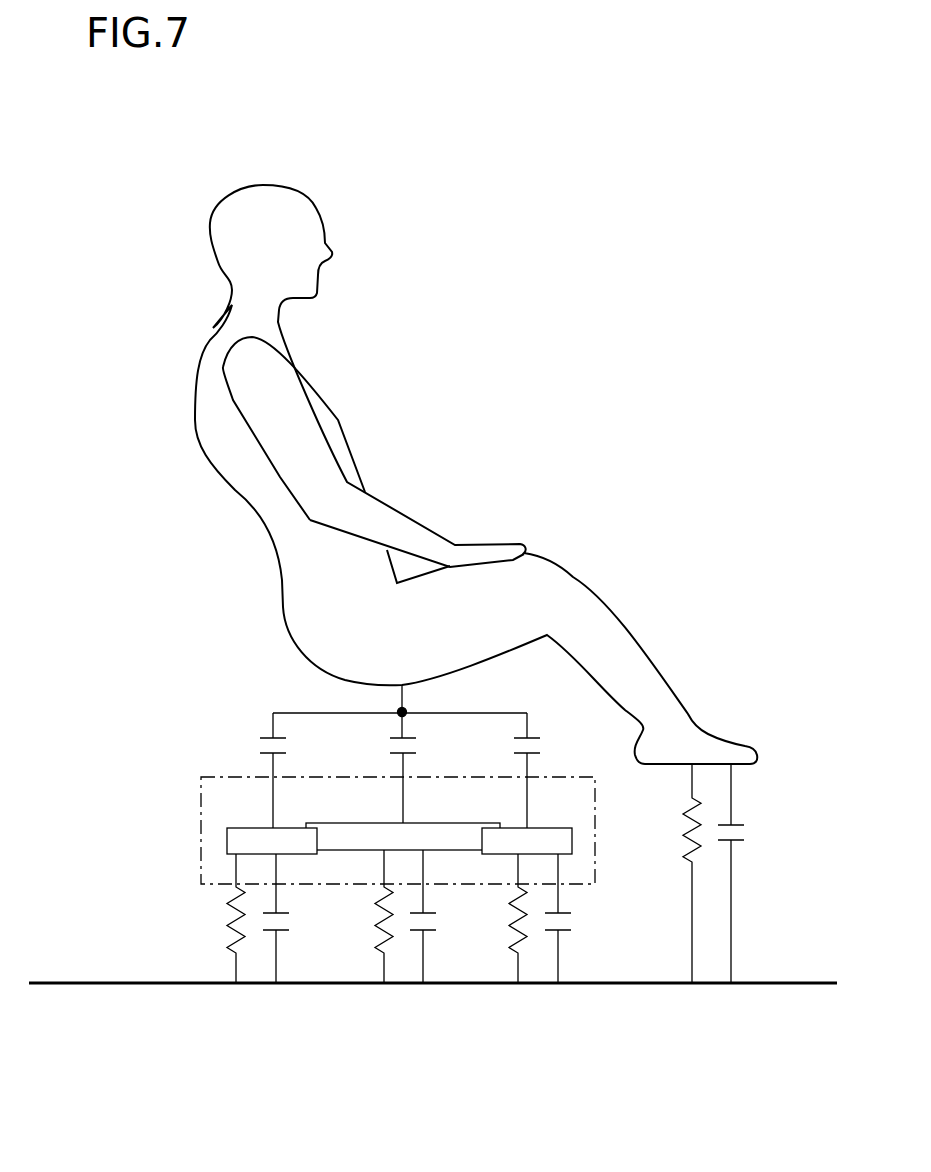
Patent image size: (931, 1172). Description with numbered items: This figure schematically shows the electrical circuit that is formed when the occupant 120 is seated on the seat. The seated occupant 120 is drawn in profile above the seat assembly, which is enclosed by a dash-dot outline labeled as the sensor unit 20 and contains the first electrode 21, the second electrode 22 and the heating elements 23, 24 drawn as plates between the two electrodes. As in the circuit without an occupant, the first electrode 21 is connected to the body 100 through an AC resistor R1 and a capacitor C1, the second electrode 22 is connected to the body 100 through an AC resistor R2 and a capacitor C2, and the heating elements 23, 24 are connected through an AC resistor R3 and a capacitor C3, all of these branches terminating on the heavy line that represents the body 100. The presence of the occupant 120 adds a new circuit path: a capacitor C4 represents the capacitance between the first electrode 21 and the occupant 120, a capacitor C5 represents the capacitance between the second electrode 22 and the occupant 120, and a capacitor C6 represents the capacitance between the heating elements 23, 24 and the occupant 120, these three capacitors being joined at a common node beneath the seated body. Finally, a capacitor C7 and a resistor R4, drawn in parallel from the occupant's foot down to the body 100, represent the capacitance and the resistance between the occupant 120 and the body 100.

The occupant 120 is at (260, 185).
The sensor unit 20 is at (199, 806).
The first electrode 21 is at (238, 828).
The second electrode 22 is at (561, 828).
The heating element 23 is at (451, 823).
The heating element 24 is at (403, 817).
The body 100 is at (63, 982).
The capacitor C1 is at (291, 918).
The capacitor C2 is at (573, 918).
The capacitor C3 is at (441, 916).
The capacitor C4 is at (255, 770).
The capacitor C5 is at (511, 770).
The capacitor C6 is at (386, 780).
The capacitor C7 is at (746, 873).
The AC resistor R1 is at (218, 918).
The AC resistor R2 is at (501, 918).
The AC resistor R3 is at (368, 916).
The resistor R4 is at (673, 873).